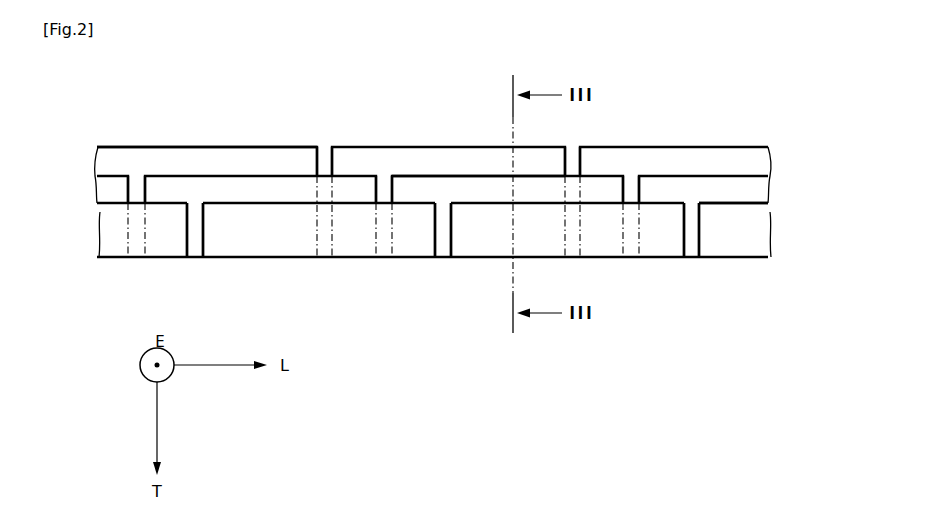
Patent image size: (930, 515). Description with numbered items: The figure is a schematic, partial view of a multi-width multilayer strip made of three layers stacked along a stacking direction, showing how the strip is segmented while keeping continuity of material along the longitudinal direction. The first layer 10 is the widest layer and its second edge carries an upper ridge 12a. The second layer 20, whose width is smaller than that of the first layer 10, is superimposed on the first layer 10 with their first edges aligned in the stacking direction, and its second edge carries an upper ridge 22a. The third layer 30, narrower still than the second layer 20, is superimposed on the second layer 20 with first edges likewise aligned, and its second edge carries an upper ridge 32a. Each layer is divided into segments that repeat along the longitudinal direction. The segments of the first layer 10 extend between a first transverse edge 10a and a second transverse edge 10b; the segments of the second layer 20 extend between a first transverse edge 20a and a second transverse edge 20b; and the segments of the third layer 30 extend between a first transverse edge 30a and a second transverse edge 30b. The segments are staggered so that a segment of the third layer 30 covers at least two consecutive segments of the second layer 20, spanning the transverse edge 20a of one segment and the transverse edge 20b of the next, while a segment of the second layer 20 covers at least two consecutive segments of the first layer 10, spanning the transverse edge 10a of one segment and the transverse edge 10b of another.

The first layer 10 is at (452, 162).
The first transverse edge 10a is at (333, 162).
The second transverse edge 10b is at (316, 162).
The upper ridge 12a is at (213, 147).
The second layer 20 is at (105, 188).
The first transverse edge 20a is at (145, 183).
The second transverse edge 20b is at (128, 183).
The upper ridge 22a is at (488, 176).
The third layer 30 is at (105, 229).
The first transverse edge 30a is at (203, 236).
The second transverse edge 30b is at (187, 236).
The upper ridge 32a is at (730, 203).